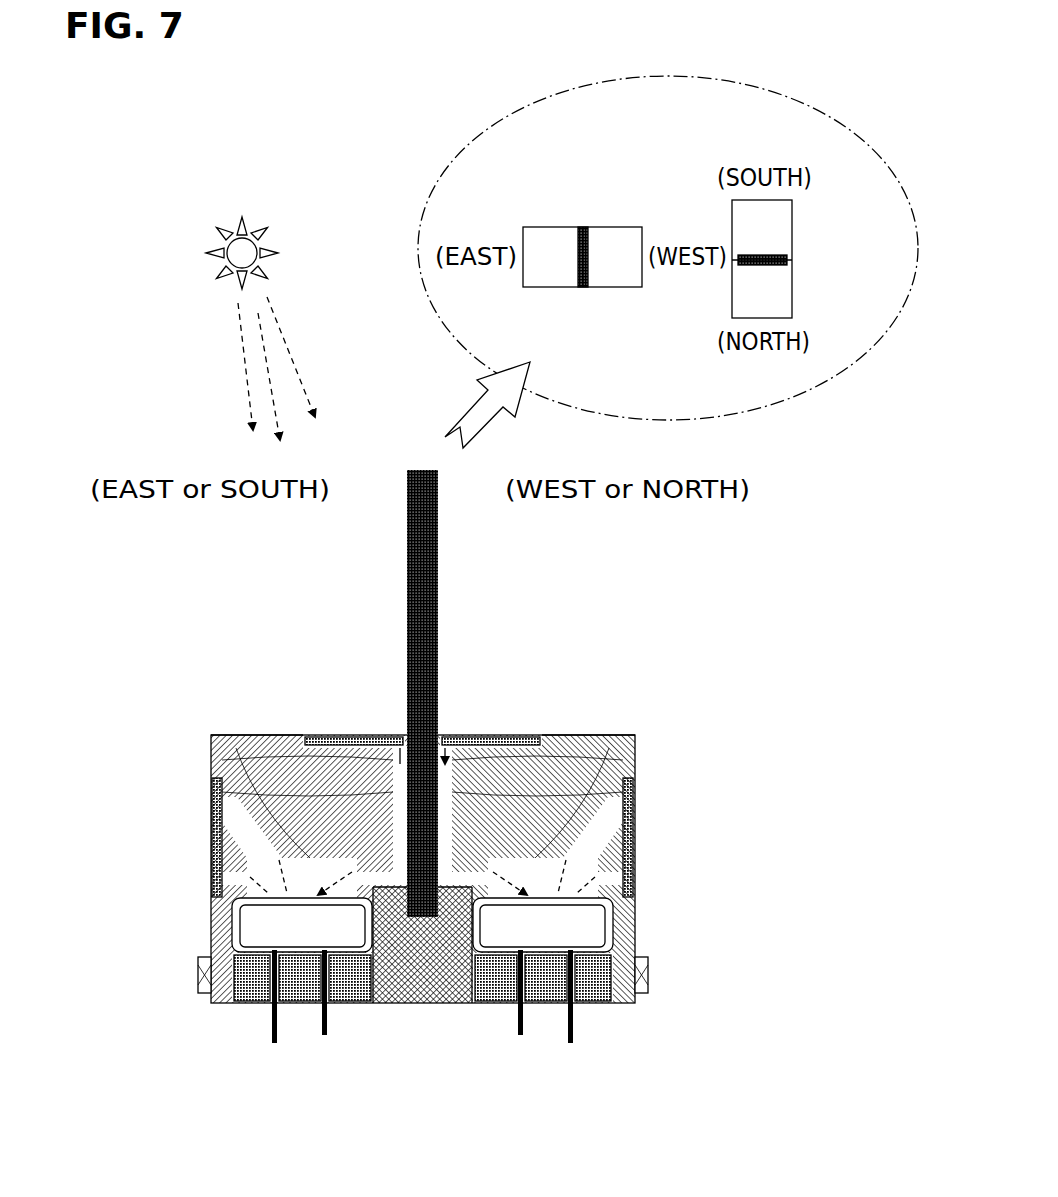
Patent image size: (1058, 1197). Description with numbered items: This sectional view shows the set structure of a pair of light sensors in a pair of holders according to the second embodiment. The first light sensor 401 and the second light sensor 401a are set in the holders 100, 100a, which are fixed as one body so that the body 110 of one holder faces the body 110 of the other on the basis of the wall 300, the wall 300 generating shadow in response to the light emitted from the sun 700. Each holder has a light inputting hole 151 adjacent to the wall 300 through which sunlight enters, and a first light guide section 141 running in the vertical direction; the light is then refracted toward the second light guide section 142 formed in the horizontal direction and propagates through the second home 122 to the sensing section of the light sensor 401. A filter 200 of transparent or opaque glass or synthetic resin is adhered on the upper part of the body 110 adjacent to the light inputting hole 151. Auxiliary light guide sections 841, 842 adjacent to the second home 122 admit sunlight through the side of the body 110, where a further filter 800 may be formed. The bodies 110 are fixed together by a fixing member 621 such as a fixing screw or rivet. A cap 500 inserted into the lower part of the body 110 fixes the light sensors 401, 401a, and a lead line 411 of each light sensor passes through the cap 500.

The sun 700 is at (275, 242).
The holder 100 is at (553, 233).
The holder 100a is at (610, 237).
The wall 300 is at (407, 600).
The filter 200 is at (338, 735).
The light inputting hole 151 is at (395, 734).
The second home 122 is at (283, 737).
The auxiliary light guide section 841 is at (208, 753).
The first light guide section 141 is at (211, 752).
The filter 800 is at (212, 845).
The auxiliary light guide section 842 is at (212, 860).
The body 110 is at (209, 923).
The fixing member 621 is at (198, 977).
The first light sensor 401 is at (302, 925).
The second light sensor 401a is at (543, 925).
The lead line 411 is at (272, 1032).
The cap 500 is at (297, 1003).
The second light guide section 142 is at (392, 1003).